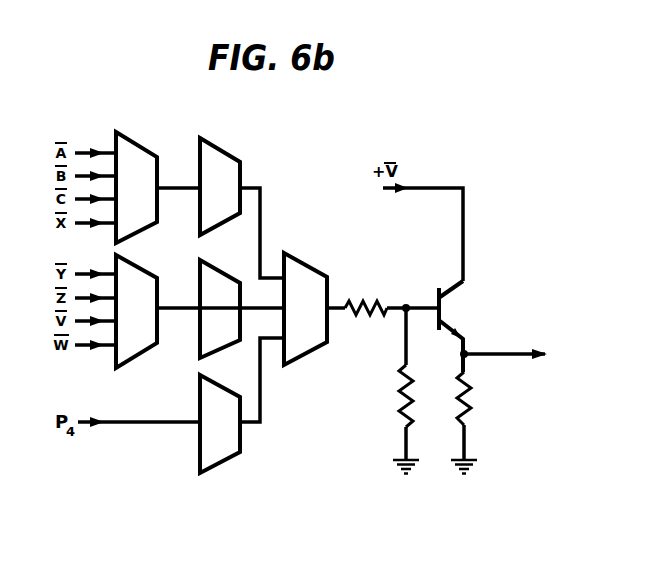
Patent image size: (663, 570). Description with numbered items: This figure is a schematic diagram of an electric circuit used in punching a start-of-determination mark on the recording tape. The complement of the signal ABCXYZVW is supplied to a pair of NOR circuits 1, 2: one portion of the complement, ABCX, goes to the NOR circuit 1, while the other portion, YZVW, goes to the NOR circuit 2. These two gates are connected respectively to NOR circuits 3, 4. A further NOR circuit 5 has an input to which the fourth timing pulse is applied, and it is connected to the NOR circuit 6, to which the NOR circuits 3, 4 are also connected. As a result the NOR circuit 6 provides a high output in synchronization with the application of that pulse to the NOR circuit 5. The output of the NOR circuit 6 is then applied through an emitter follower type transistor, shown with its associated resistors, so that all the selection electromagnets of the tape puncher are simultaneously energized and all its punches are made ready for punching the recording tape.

The NOR circuit 1 is at (136, 187).
The NOR circuit 2 is at (136, 311).
The NOR circuit 3 is at (220, 186).
The NOR circuit 4 is at (220, 309).
The NOR circuit 5 is at (220, 424).
The NOR circuit 6 is at (305, 309).